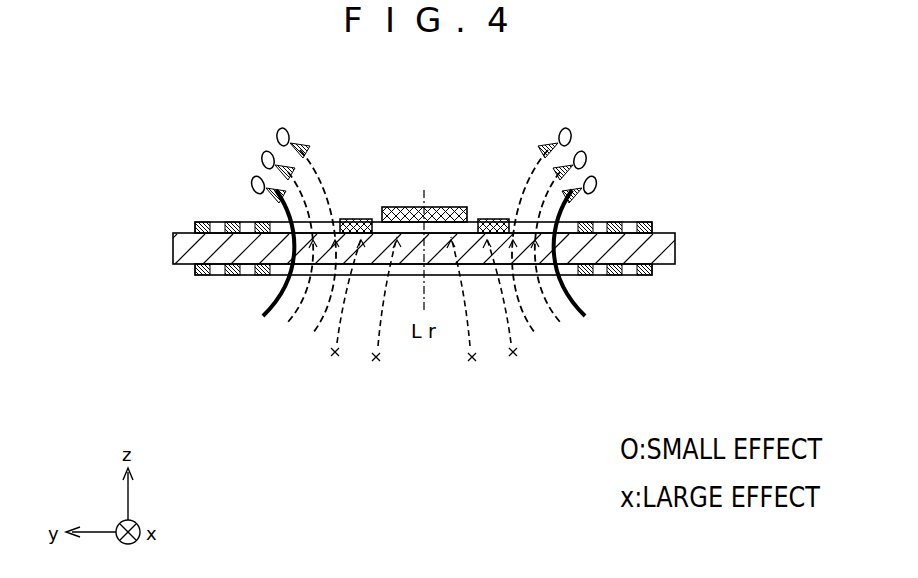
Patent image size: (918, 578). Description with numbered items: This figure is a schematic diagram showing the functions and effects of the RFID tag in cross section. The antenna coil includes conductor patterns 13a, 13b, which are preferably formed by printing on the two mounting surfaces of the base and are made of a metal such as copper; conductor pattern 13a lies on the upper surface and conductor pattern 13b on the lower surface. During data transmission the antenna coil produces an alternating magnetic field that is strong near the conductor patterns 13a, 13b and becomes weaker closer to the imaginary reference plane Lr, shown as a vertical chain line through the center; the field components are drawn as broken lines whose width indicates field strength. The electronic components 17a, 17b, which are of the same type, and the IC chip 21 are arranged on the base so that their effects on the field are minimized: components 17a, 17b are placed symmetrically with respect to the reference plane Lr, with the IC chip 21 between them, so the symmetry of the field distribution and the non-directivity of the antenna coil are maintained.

The conductor pattern 13a is at (207, 212).
The conductor pattern 13b is at (202, 283).
The electronic component 17a is at (358, 216).
The electronic component 17b is at (497, 217).
The IC chip 21 is at (447, 205).